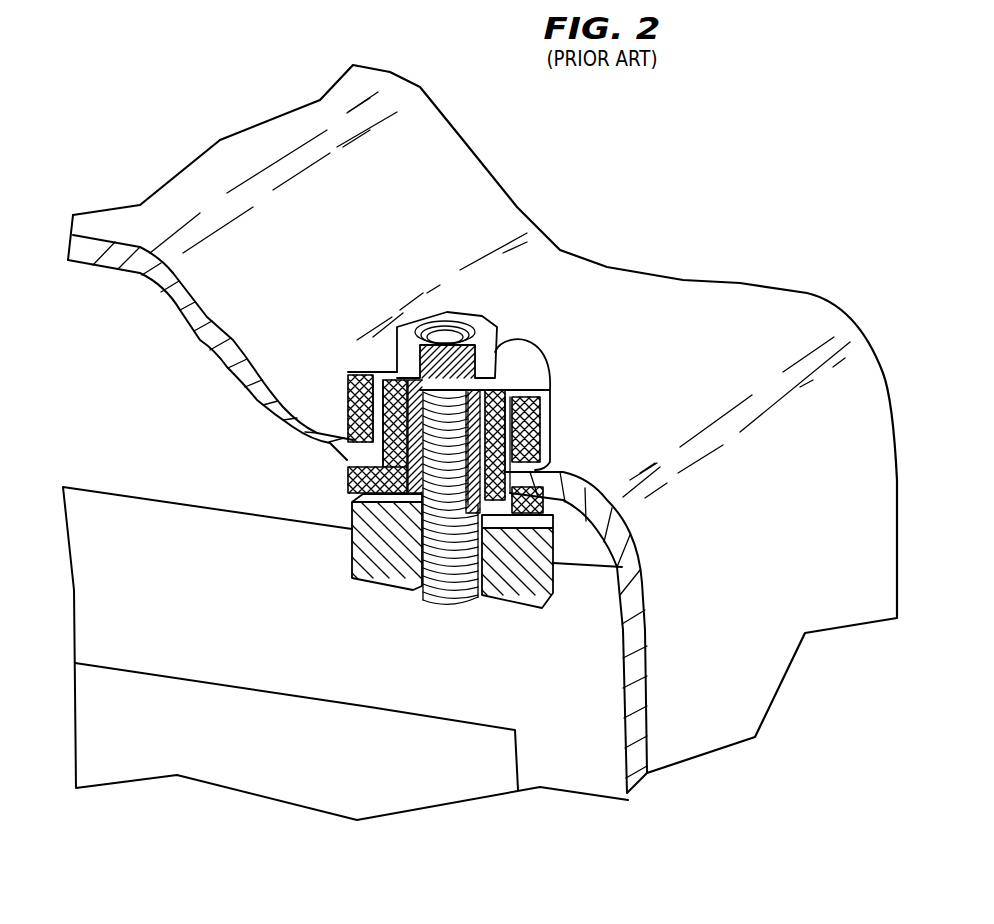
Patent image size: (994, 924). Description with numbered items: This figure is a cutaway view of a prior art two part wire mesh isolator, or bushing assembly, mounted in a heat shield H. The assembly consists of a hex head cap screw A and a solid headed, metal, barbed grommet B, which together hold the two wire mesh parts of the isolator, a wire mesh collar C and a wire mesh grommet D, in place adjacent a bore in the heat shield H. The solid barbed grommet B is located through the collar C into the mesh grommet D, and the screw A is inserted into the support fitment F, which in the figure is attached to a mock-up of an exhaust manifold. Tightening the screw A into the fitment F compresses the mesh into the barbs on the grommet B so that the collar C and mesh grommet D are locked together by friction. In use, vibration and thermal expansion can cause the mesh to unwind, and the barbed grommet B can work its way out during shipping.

The heat shield H is at (270, 135).
The hex head cap screw A is at (473, 317).
The barbed grommet B is at (518, 376).
The wire mesh collar C is at (533, 430).
The wire mesh grommet D is at (537, 505).
The support fitment F is at (352, 543).